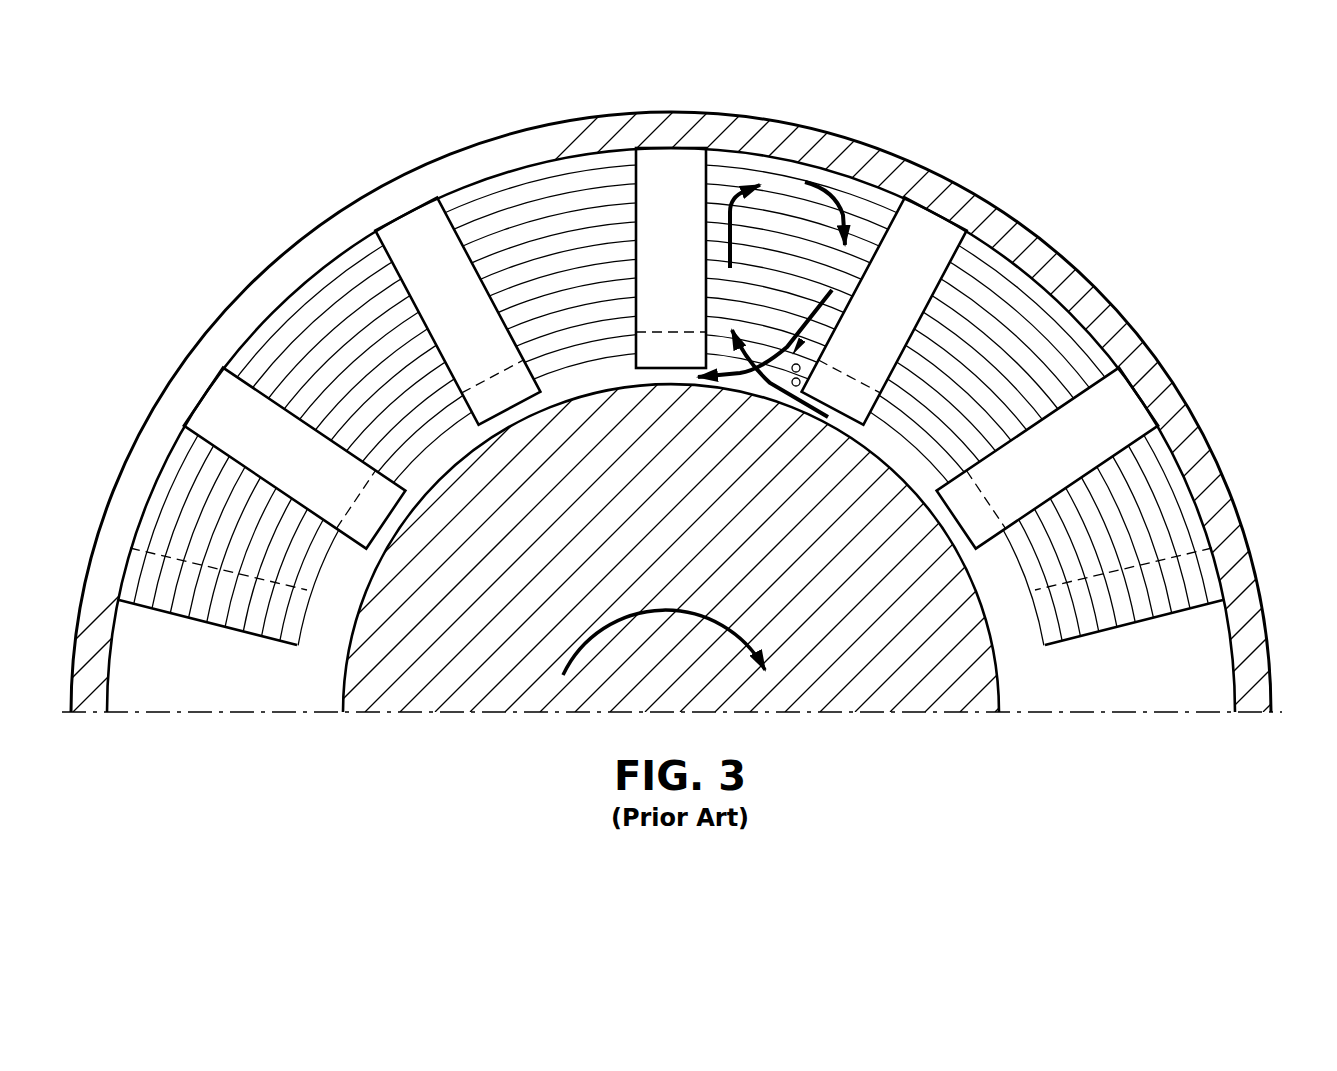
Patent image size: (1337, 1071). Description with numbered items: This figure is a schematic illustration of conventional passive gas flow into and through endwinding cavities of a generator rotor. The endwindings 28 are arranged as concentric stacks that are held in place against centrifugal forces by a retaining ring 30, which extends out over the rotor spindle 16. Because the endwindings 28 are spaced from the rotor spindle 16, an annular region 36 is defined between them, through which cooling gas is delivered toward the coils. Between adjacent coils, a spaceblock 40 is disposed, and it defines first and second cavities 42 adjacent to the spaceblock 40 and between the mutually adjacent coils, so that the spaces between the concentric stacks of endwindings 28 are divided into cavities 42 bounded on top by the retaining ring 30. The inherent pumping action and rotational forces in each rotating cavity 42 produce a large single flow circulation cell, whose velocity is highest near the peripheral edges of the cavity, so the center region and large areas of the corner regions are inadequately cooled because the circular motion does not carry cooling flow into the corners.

The rotor spindle 16 is at (795, 685).
The endwindings 28 is at (1153, 625).
The retaining ring 30 is at (1240, 560).
The annular region 36 is at (582, 375).
The spaceblock 40 is at (675, 182).
The cavities 42 is at (1007, 307).